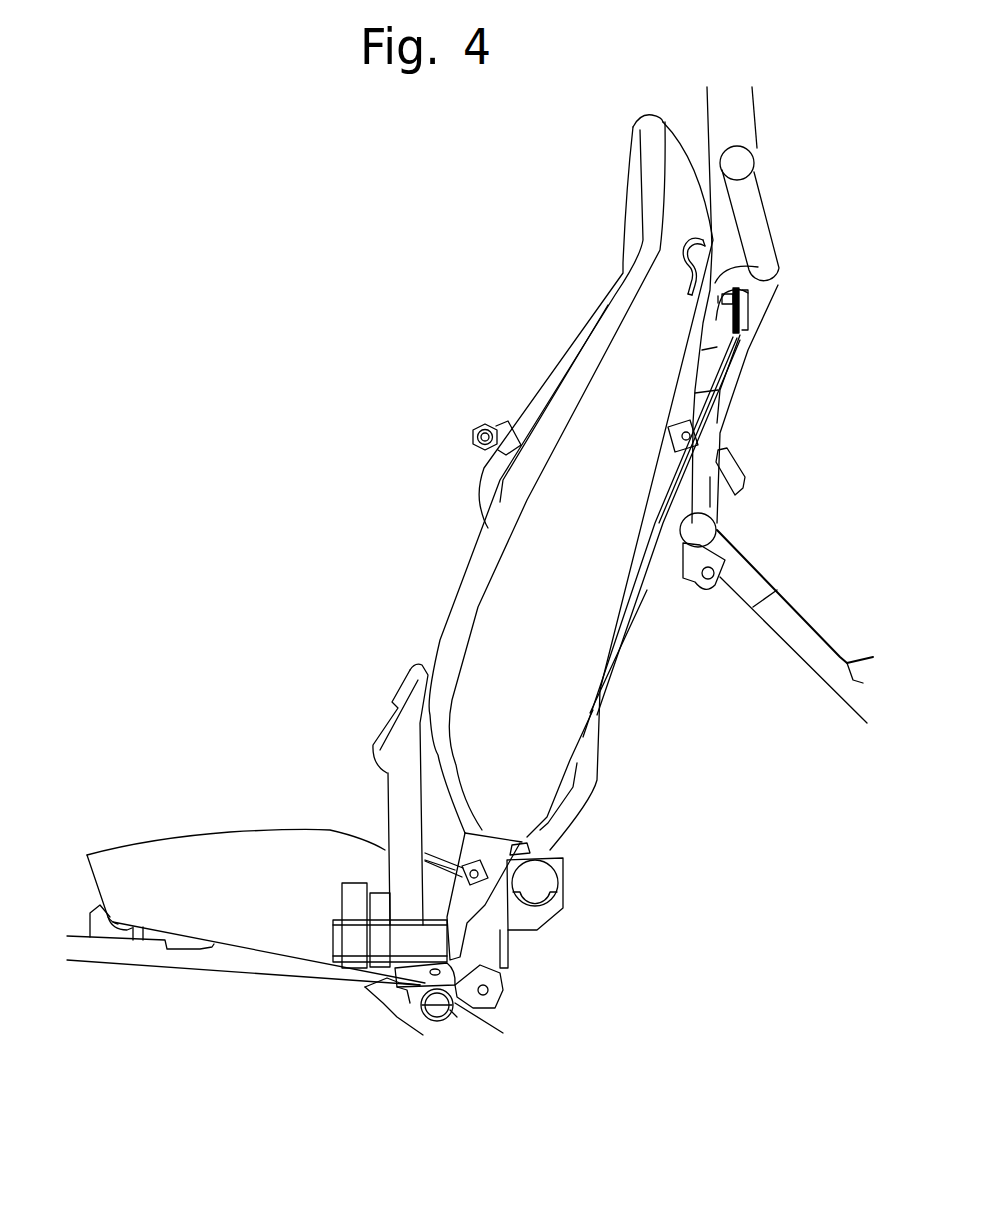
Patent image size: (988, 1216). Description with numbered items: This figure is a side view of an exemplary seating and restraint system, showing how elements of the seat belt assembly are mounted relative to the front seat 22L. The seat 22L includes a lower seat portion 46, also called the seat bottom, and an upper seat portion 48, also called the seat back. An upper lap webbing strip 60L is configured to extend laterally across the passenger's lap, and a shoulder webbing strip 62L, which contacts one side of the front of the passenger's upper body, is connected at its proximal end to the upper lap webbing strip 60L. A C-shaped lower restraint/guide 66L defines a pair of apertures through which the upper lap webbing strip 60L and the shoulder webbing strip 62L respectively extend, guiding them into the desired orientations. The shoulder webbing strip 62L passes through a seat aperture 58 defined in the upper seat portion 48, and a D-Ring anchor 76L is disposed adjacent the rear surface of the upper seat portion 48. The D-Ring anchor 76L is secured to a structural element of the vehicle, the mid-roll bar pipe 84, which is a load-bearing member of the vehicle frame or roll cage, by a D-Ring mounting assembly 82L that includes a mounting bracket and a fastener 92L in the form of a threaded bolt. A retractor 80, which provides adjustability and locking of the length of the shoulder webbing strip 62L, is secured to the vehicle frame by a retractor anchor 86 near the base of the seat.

The upper seat portion 48 is at (679, 130).
The mid-roll bar pipe 84 is at (758, 222).
The fastener 92L is at (758, 267).
The seat aperture 58 is at (677, 262).
The D-Ring mounting assembly 82L is at (776, 311).
The D-Ring anchor 76L is at (737, 327).
The shoulder webbing strip 62L is at (727, 380).
The lower restraint/guide 66L is at (417, 668).
The lower seat portion 46 is at (160, 825).
The front seat 22L is at (82, 890).
The upper lap webbing strip 60L is at (395, 873).
The retractor 80 is at (557, 884).
The retractor anchor 86 is at (508, 946).